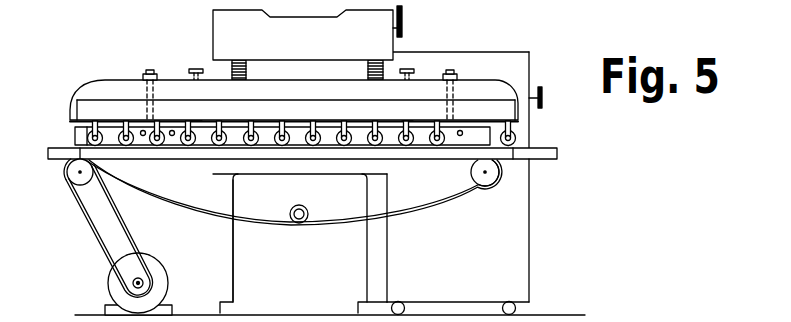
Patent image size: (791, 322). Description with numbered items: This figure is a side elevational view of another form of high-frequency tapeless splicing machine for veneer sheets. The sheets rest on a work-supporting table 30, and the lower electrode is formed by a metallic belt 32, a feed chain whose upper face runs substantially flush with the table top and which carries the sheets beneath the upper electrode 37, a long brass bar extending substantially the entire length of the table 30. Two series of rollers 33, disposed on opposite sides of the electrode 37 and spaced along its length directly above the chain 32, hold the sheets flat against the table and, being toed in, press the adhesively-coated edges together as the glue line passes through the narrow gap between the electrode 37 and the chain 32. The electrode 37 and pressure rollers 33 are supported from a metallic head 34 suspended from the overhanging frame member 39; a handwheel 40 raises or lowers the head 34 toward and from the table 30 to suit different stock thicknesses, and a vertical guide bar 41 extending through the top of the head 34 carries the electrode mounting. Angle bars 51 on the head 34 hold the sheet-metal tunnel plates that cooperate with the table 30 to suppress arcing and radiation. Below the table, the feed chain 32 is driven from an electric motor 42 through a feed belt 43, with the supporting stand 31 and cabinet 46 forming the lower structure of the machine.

The work-supporting table 30 is at (553, 151).
The stand 31 is at (233, 265).
The metallic belt 32 is at (450, 210).
The rollers 33 is at (122, 131).
The metallic head 34 is at (88, 88).
The upper electrode 37 is at (115, 150).
The overhanging frame member 39 is at (216, 30).
The handwheel 40 is at (402, 28).
The vertical guide bar 41 is at (149, 72).
The electric motor 42 is at (112, 288).
The feed belt 43 is at (122, 221).
The cabinet 46 is at (521, 246).
The angle bars 51 is at (80, 107).